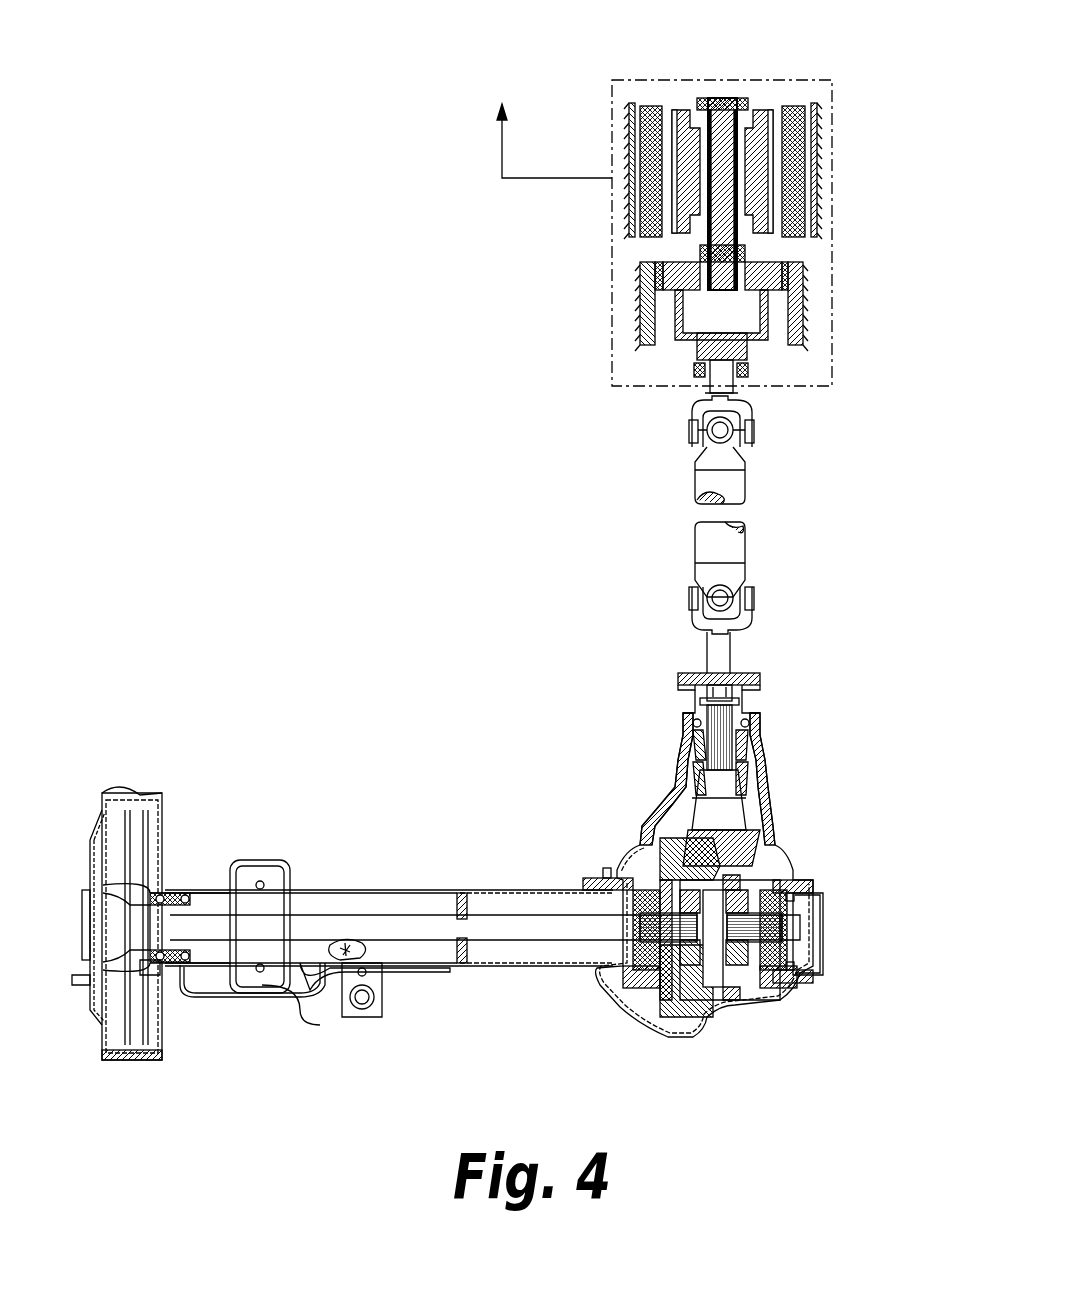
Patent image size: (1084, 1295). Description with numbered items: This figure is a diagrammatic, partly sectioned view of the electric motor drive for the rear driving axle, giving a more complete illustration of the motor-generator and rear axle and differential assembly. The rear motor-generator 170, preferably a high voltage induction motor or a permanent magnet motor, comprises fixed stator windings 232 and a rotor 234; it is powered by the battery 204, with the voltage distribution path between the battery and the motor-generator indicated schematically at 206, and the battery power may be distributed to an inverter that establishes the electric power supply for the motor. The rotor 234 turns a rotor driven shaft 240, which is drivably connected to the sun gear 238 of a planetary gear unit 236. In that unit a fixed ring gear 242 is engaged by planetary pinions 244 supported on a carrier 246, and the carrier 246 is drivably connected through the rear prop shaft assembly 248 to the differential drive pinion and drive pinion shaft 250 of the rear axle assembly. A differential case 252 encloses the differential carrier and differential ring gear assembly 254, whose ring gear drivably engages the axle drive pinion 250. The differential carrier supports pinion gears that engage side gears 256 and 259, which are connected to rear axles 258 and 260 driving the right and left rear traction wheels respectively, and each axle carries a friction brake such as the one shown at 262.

The rear motor-generator 170 is at (612, 273).
The battery 204 is at (590, 105).
The voltage distribution path 206 is at (586, 77).
The stator windings 232 is at (800, 167).
The rotor 234 is at (745, 130).
The planetary gear unit 236 is at (803, 314).
The sun gear 238 is at (700, 291).
The rotor driven shaft 240 is at (718, 247).
The fixed ring gear 242 is at (792, 276).
The planetary pinions 244 is at (772, 296).
The carrier 246 is at (680, 296).
The rear prop shaft assembly 248 is at (752, 550).
The differential drive pinion and drive pinion shaft 250 is at (742, 815).
The differential case 252 is at (762, 1010).
The differential carrier and differential ring gear assembly 254 is at (660, 983).
The side gear 256 is at (766, 893).
The rear axle 258 is at (816, 931).
The side gear 259 is at (648, 888).
The rear axle 260 is at (515, 930).
The friction brake 262 is at (150, 792).